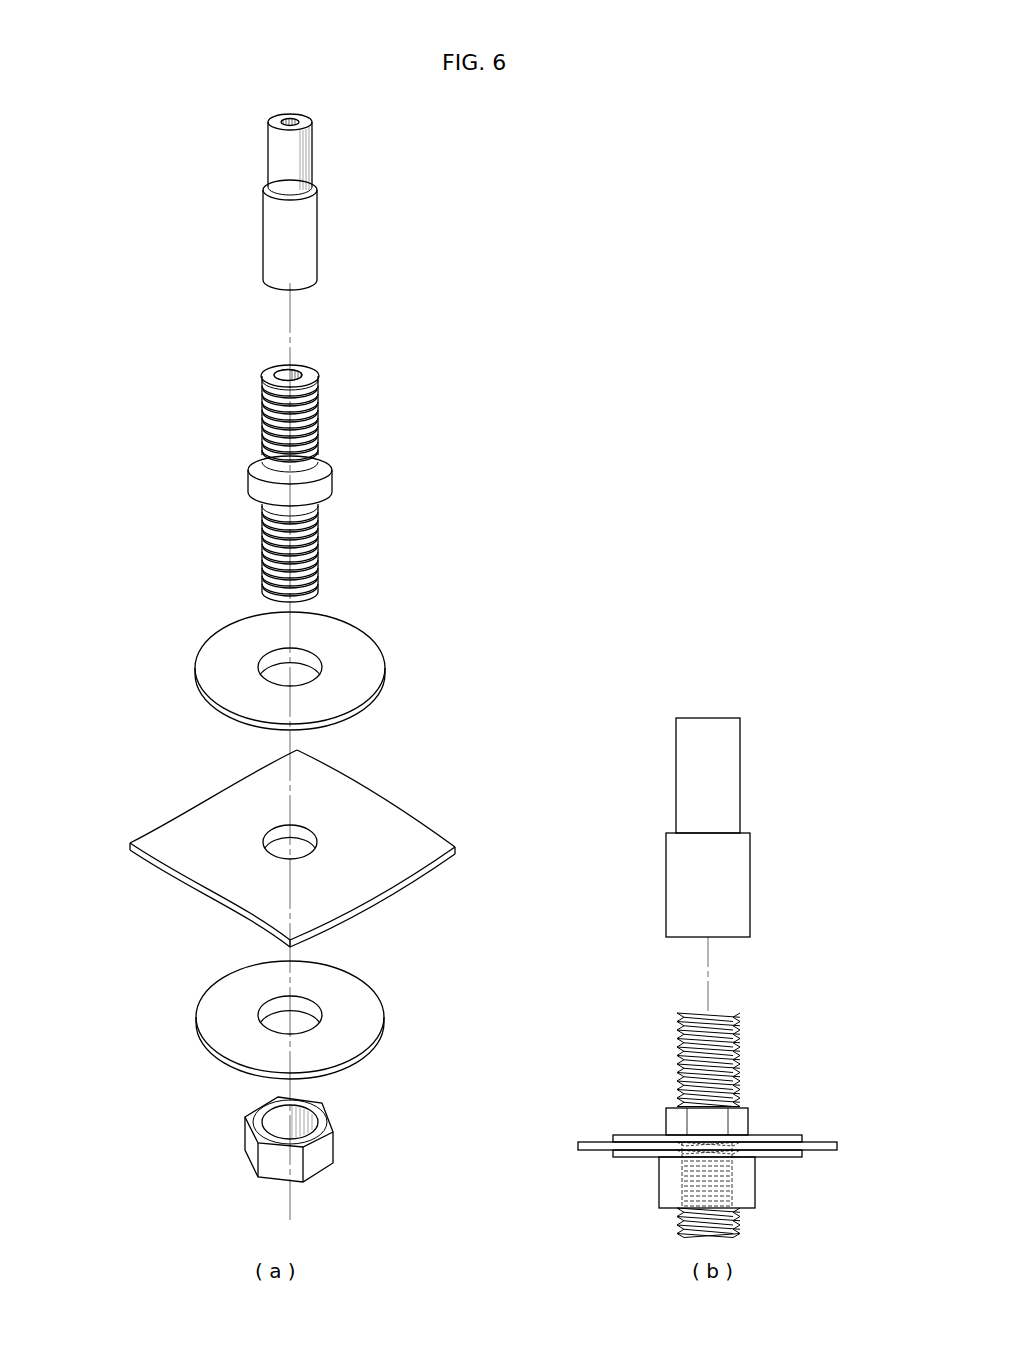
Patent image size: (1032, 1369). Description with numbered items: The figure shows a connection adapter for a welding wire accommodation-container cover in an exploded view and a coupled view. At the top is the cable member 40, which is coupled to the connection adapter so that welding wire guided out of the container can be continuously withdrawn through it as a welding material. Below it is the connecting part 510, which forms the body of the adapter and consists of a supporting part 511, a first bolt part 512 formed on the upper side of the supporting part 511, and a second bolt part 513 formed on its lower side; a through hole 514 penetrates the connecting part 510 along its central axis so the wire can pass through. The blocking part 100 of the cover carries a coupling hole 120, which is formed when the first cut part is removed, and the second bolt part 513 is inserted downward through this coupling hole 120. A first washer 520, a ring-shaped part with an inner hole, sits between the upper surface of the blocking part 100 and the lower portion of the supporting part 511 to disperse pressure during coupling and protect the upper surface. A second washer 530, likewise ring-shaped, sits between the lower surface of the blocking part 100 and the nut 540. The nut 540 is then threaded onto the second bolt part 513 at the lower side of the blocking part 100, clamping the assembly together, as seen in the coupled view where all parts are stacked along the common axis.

The cable member 40 is at (317, 203).
The blocking part 100 is at (473, 950).
The coupling hole 120 is at (282, 838).
The connecting part 510 is at (402, 801).
The supporting part 511 is at (332, 480).
The first bolt part 512 is at (318, 415).
The second bolt part 513 is at (318, 538).
The hole of stud bolt 514 is at (285, 378).
The first washer 520 is at (385, 653).
The second washer 530 is at (383, 1007).
The nut 540 is at (333, 1145).